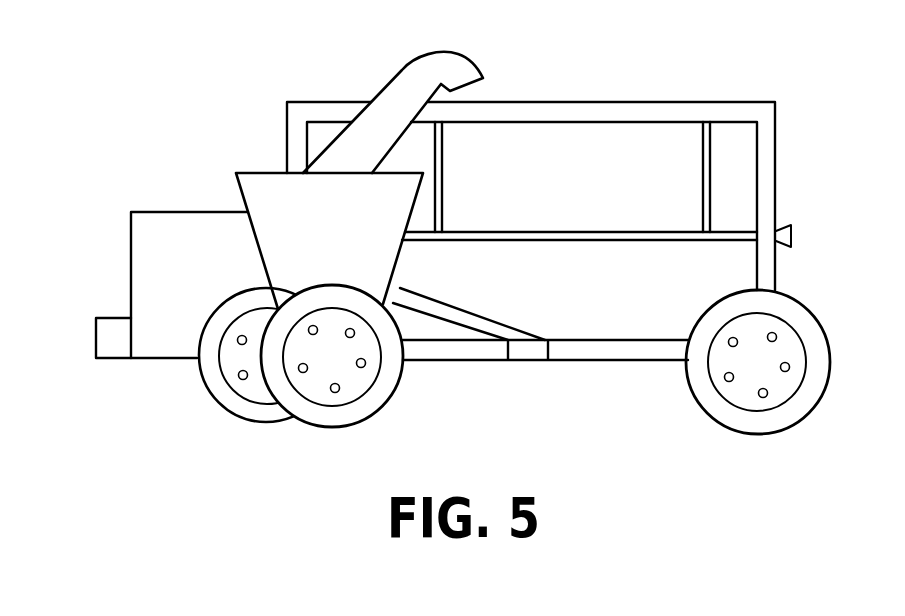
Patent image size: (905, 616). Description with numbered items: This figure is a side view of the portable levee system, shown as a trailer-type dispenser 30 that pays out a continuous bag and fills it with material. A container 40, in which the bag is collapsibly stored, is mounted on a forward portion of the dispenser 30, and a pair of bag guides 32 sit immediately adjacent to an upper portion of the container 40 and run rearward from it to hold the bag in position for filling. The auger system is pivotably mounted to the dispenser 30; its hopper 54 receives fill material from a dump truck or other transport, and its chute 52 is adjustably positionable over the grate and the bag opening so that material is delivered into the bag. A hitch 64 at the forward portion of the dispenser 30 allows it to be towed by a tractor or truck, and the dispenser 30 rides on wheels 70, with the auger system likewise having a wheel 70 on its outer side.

The dispenser 30 is at (611, 90).
The bag guides 32 is at (791, 238).
The container 40 is at (165, 230).
The chute 52 is at (435, 62).
The hopper 54 is at (268, 190).
The hitch 64 is at (113, 330).
The wheels 70 is at (303, 410).